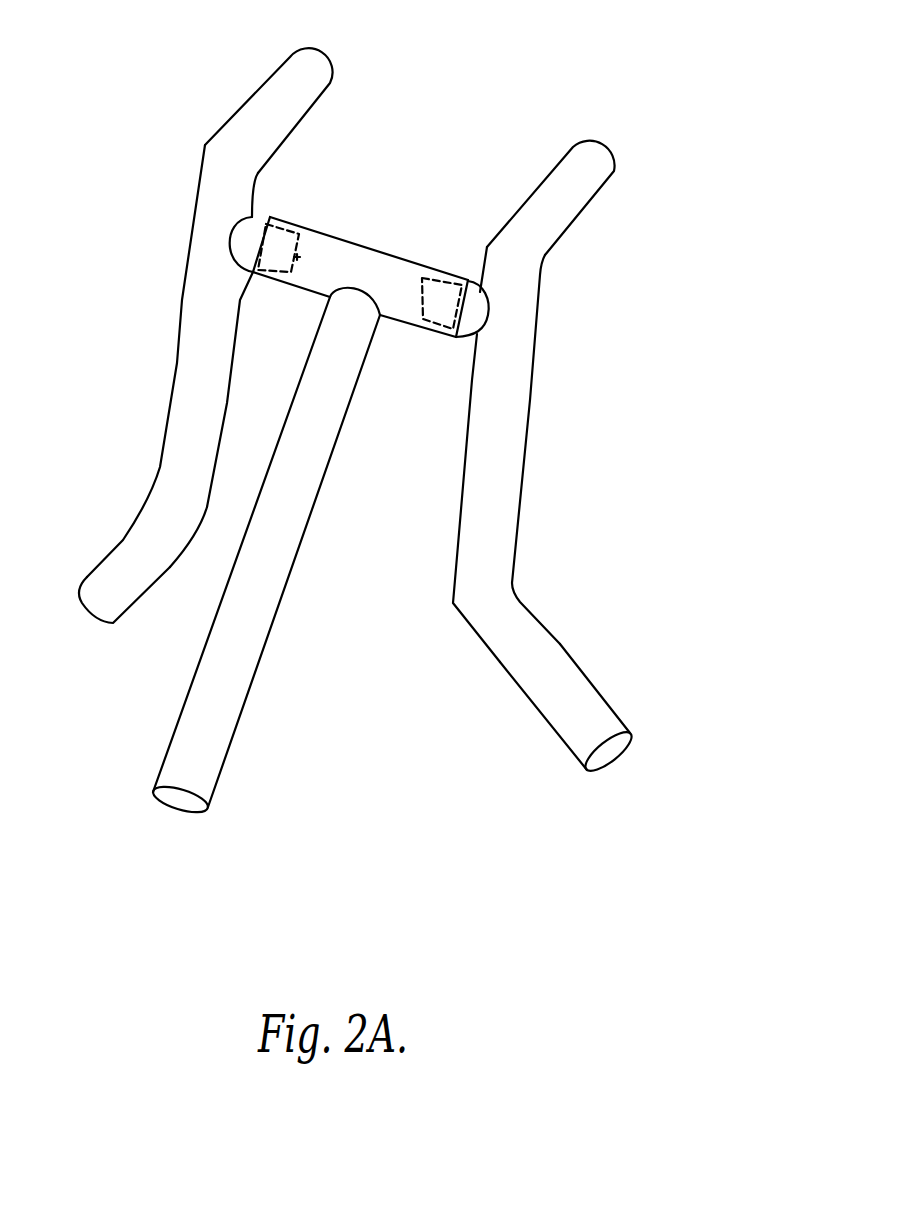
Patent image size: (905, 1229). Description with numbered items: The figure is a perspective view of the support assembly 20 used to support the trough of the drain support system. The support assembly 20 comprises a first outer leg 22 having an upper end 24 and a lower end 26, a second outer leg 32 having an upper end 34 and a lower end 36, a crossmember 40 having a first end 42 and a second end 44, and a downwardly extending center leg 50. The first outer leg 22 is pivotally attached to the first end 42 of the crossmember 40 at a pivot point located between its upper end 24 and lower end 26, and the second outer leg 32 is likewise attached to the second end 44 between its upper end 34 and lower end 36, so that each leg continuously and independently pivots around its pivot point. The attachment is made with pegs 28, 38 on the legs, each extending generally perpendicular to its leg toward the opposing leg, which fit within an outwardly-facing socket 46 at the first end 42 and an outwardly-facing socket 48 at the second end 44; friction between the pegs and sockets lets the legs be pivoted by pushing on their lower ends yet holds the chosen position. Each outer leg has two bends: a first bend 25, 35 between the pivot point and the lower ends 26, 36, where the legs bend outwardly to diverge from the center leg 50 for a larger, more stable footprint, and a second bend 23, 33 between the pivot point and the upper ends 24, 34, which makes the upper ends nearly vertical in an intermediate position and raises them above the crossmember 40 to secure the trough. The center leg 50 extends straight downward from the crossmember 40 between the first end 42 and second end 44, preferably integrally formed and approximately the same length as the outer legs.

The support assembly 20 is at (558, 85).
The first outer leg 22 is at (178, 364).
The second bend 23 is at (212, 156).
The upper end 24 is at (298, 68).
The first bend 25 is at (195, 516).
The lower end 26 is at (90, 585).
The peg 28 is at (253, 226).
The second outer leg 32 is at (516, 436).
The second bend 33 is at (535, 257).
The upper end 34 is at (603, 165).
The first bend 35 is at (464, 592).
The lower end 36 is at (622, 733).
The peg 38 is at (474, 295).
The crossmember 40 is at (373, 262).
The first end 42 is at (298, 286).
The second end 44 is at (435, 328).
The socket 46 is at (305, 256).
The socket 48 is at (428, 278).
The center leg 50 is at (284, 578).